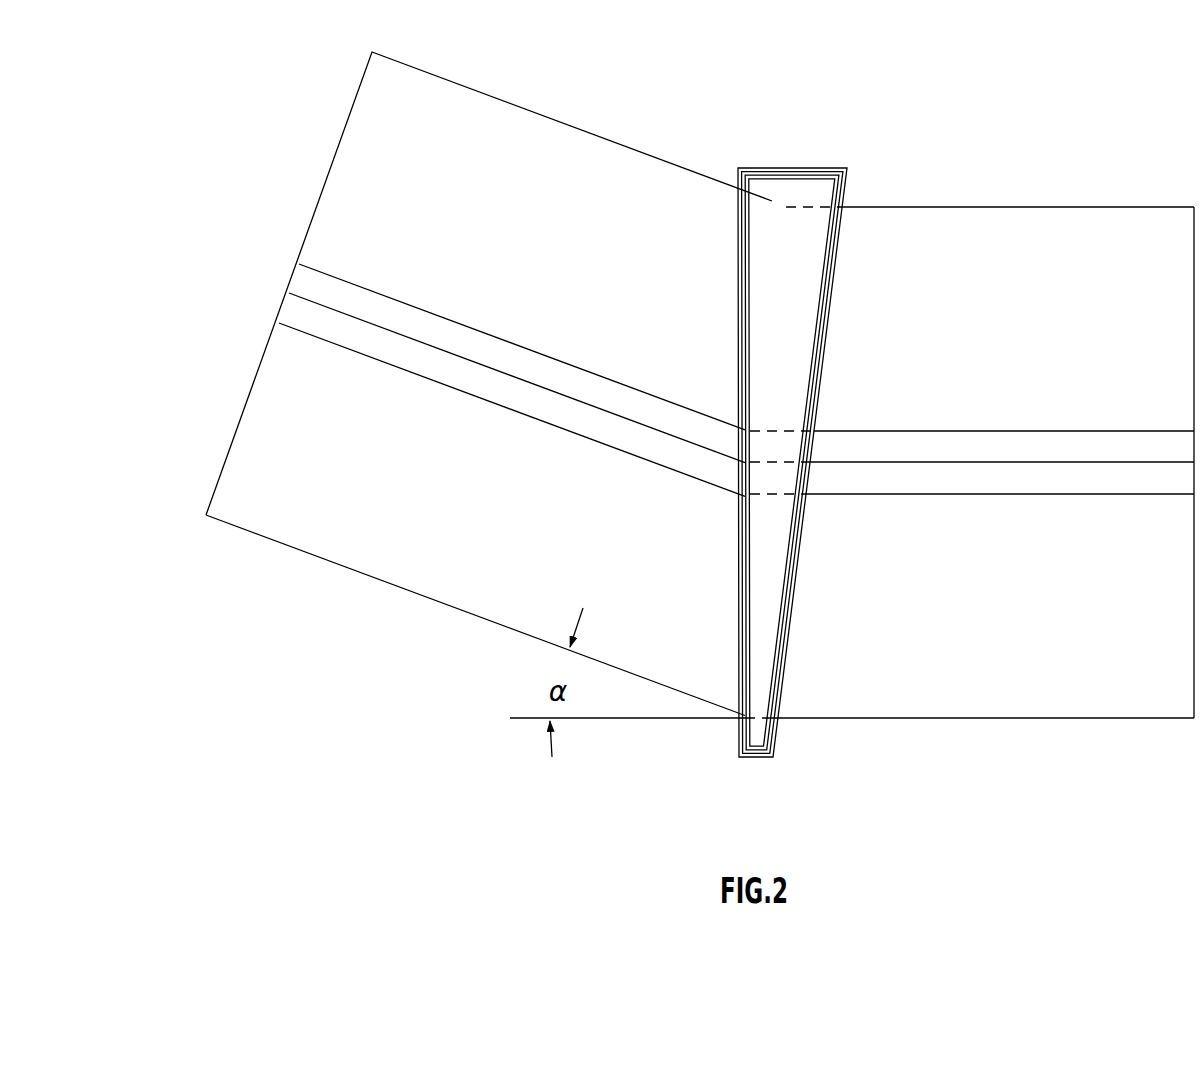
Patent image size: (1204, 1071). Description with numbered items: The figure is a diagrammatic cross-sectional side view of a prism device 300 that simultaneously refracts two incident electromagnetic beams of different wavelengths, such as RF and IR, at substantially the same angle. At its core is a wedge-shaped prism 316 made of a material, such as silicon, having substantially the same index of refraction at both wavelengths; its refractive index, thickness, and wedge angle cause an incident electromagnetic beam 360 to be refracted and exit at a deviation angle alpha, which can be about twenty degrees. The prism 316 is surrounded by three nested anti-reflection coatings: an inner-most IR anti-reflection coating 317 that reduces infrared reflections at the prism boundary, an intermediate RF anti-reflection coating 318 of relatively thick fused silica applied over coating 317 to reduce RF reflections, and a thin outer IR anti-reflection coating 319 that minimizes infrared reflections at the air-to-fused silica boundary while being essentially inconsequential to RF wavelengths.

The prism device 300 is at (802, 381).
The wedge-shaped prism 316 is at (822, 203).
The inner-most IR anti-reflection coating 317 is at (783, 175).
The intermediate RF anti-reflection coating 318 is at (760, 172).
The outer IR anti-reflection coating 319 is at (740, 169).
The incident electromagnetic beam 360 is at (498, 298).